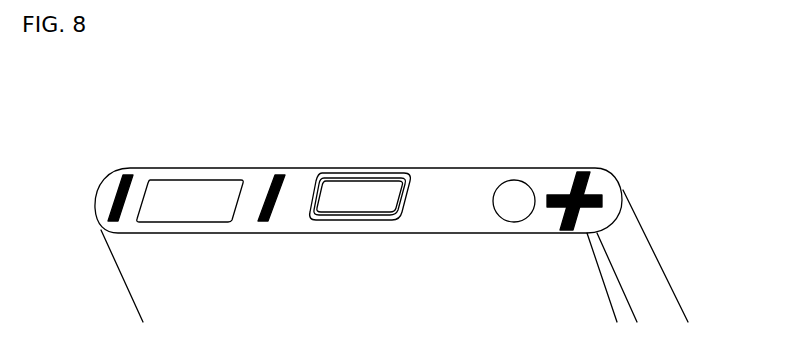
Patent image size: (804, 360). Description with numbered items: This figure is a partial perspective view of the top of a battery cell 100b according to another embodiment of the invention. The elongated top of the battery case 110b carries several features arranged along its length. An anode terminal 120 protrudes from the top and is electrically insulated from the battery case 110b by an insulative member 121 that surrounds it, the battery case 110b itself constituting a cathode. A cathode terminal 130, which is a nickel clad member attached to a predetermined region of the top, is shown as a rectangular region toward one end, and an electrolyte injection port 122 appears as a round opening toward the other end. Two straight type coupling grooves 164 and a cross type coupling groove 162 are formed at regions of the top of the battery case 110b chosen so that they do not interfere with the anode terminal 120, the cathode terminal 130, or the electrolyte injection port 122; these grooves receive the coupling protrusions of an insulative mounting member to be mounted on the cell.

The battery cell 100b is at (130, 77).
The battery case 110b is at (128, 217).
The anode terminal 120 is at (360, 183).
The insulative member 121 is at (405, 183).
The electrolyte injection port 122 is at (517, 200).
The cathode terminal 130 is at (190, 183).
The cross type coupling groove 162 is at (585, 190).
The straight type coupling grooves 164 is at (127, 177).